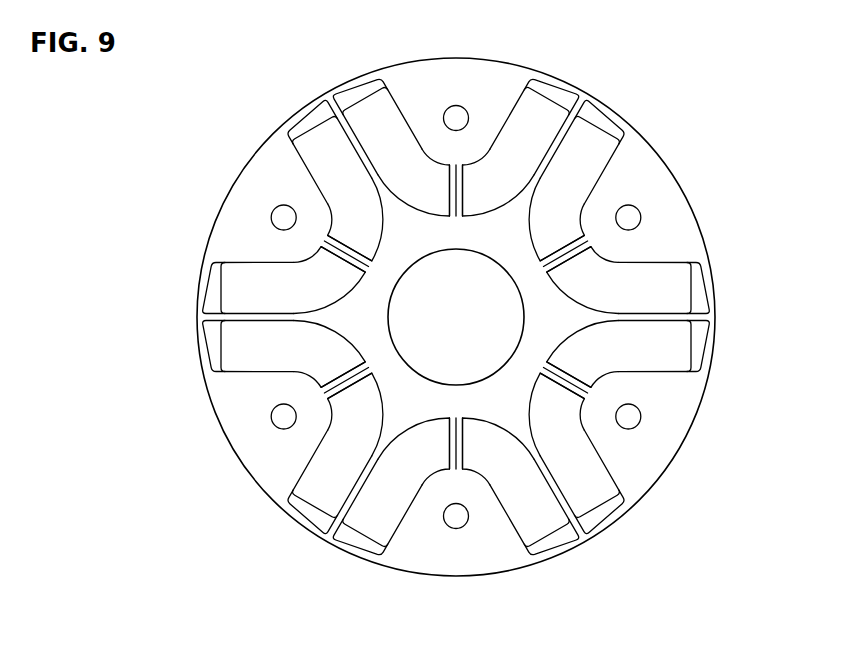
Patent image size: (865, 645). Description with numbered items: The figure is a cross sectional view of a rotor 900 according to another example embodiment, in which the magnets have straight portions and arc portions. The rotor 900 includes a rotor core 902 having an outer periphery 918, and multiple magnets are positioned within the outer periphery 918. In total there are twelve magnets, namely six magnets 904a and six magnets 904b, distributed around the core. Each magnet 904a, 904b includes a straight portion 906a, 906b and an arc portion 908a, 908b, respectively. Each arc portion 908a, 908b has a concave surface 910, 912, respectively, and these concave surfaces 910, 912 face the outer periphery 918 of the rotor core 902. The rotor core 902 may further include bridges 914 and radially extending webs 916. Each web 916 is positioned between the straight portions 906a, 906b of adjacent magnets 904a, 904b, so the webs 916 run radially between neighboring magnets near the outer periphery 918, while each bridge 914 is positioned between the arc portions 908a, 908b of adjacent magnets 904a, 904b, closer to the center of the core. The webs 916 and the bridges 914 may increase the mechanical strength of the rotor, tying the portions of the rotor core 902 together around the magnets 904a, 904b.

The rotor 900 is at (740, 58).
The rotor core 902 is at (677, 433).
The magnet 904a is at (588, 165).
The magnet 904b is at (650, 273).
The straight portion 906a is at (592, 135).
The straight portion 906b is at (677, 293).
The arc portion 908a is at (590, 186).
The arc portion 908b is at (590, 280).
The concave surface 910 is at (653, 378).
The concave surface 912 is at (457, 469).
The bridge 914 is at (447, 522).
The radially extending web 916 is at (566, 526).
The outer periphery 918 is at (667, 473).